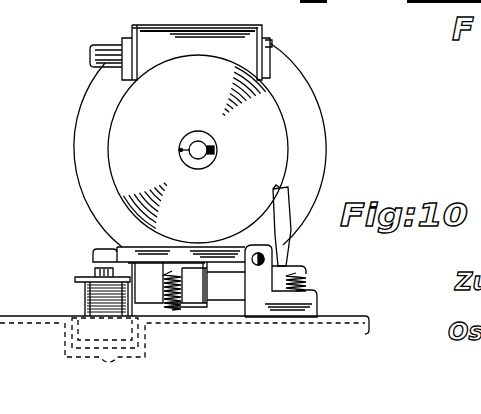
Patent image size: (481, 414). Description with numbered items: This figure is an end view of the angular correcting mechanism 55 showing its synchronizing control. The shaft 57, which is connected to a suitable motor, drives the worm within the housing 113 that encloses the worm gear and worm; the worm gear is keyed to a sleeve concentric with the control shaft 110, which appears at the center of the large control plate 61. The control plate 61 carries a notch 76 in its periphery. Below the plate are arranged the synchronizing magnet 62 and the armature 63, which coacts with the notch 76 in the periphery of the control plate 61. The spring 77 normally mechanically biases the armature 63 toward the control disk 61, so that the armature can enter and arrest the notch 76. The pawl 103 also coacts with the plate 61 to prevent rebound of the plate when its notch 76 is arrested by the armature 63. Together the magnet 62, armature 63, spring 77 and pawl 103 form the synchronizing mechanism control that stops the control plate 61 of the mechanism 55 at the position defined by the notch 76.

The housing 113 is at (251, 27).
The shaft 57 is at (94, 56).
The angular correcting mechanism 55 is at (293, 67).
The control plate 61 is at (272, 127).
The control shaft 110 is at (197, 142).
The notch 76 is at (198, 246).
The pawl 103 is at (288, 235).
The synchronizing magnet 62 is at (78, 291).
The spring 77 is at (164, 302).
The armature 63 is at (230, 254).